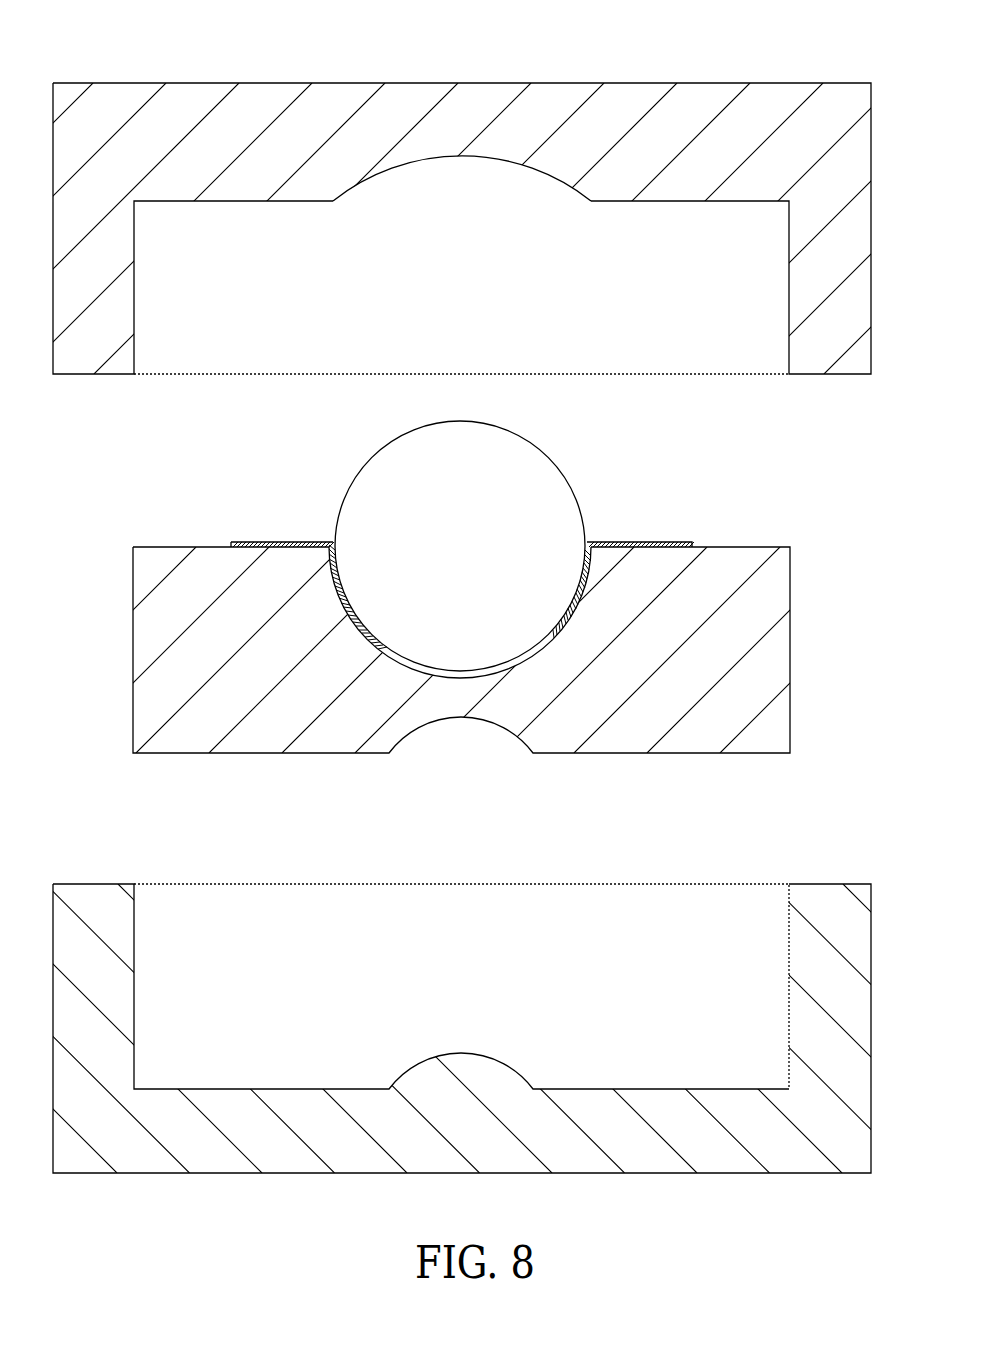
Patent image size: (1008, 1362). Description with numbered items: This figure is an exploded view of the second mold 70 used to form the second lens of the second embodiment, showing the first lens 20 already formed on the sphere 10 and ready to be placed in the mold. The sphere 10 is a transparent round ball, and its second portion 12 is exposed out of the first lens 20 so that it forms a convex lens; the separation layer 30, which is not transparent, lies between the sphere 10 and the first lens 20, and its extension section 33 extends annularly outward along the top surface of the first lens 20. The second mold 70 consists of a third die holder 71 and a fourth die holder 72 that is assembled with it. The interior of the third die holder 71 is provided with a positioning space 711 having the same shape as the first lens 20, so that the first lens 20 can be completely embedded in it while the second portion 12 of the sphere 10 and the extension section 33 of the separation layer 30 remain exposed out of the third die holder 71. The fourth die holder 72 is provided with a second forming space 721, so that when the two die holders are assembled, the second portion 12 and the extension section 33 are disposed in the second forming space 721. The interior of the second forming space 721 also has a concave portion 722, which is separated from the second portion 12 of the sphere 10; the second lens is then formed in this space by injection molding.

The sphere 10 is at (360, 510).
The second portion 12 is at (565, 472).
The first lens 20 is at (690, 743).
The separation layer 30 is at (592, 572).
The extension section 33 is at (247, 540).
The second mold 70 is at (198, 870).
The third die holder 71 is at (822, 882).
The positioning space 711 is at (548, 913).
The fourth die holder 72 is at (675, 105).
The second forming space 721 is at (670, 313).
The concave portion 722 is at (427, 160).